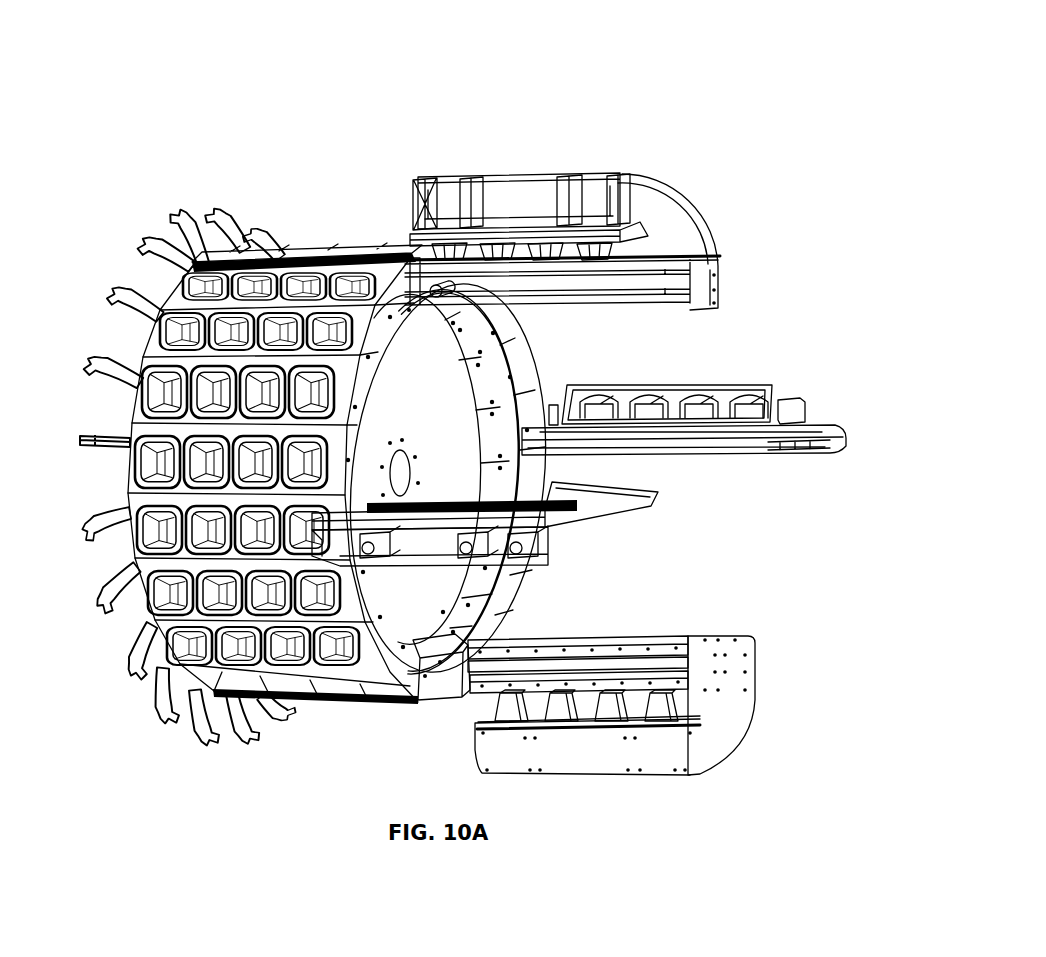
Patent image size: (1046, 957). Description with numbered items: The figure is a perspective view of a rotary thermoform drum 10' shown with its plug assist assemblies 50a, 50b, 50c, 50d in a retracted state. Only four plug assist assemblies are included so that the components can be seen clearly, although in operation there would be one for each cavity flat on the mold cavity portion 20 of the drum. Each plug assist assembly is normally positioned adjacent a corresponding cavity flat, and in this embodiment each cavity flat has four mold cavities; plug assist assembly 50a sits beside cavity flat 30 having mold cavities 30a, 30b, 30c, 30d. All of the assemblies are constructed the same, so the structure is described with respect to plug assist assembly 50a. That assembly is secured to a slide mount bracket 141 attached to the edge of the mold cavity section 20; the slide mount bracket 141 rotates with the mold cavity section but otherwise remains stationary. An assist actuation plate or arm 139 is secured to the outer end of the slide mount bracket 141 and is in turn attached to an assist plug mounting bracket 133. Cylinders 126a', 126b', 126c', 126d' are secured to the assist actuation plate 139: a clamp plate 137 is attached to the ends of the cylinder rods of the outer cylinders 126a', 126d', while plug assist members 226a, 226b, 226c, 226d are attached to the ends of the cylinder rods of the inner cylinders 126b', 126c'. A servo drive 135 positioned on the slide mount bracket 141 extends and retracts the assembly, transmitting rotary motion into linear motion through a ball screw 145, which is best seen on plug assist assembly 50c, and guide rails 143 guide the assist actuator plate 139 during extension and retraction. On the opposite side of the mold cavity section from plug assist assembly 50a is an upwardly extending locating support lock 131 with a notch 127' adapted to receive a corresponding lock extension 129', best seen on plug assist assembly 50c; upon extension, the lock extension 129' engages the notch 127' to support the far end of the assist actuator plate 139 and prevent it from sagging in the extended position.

The rotary thermoform drum 10' is at (467, 409).
The mold cavity portion 20 is at (108, 409).
The cavity flat 30 is at (330, 186).
The mold cavity 30a is at (246, 250).
The mold cavity 30b is at (292, 250).
The mold cavity 30c is at (346, 250).
The mold cavity 30d is at (390, 250).
The notch 127' is at (187, 217).
The locating support lock 131 is at (185, 219).
The assist plug mounting bracket 133 is at (513, 200).
The servo drive 135 is at (443, 302).
The clamp plate 137 is at (660, 259).
The assist actuation plate 139 is at (667, 213).
The slide mount bracket 141 is at (722, 298).
The guide rails 143 is at (525, 647).
The ball screw 145 is at (623, 663).
The lock extension 129' is at (546, 732).
The cylinder 126a' is at (449, 168).
The cylinder 126b' is at (503, 146).
The cylinder 126c' is at (596, 162).
The cylinder 126d' is at (651, 146).
The plug assist member 226a is at (448, 245).
The plug assist member 226b is at (500, 259).
The plug assist member 226c is at (545, 259).
The plug assist member 226d is at (597, 259).
The plug assist assembly 50a is at (745, 247).
The plug assist assembly 50b is at (823, 400).
The plug assist assembly 50c is at (777, 689).
The plug assist assembly 50d is at (681, 503).